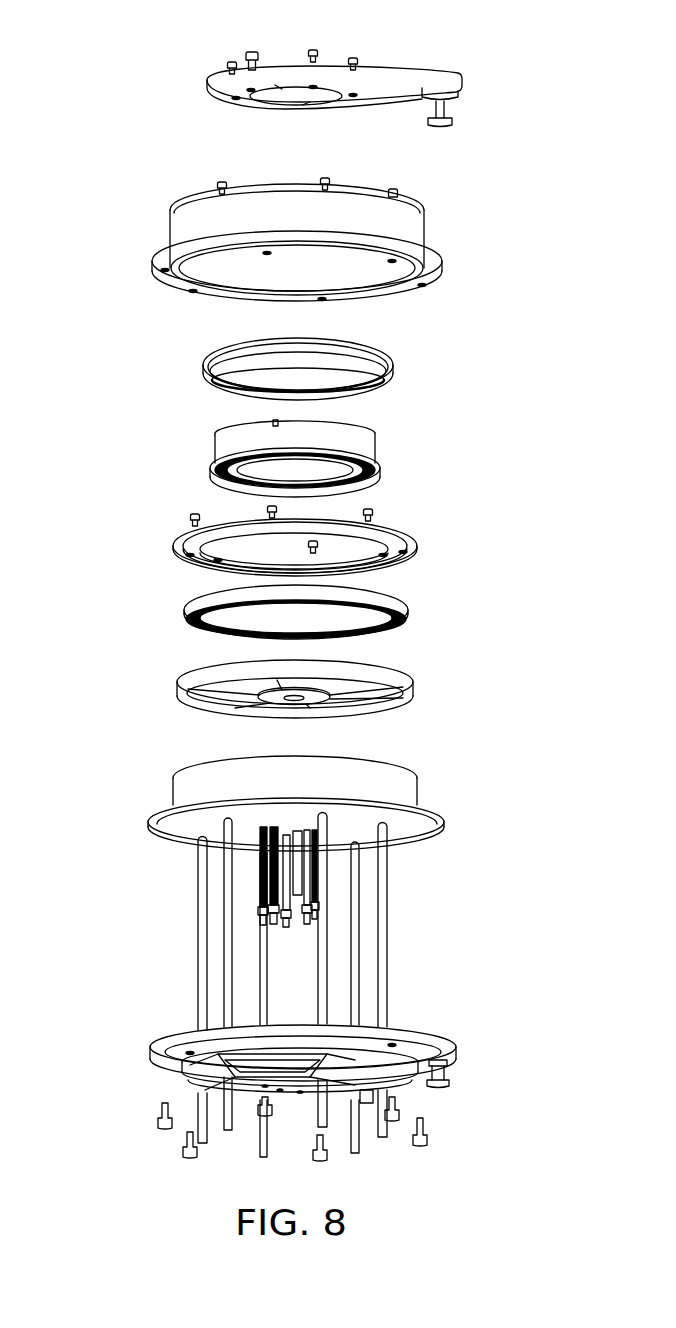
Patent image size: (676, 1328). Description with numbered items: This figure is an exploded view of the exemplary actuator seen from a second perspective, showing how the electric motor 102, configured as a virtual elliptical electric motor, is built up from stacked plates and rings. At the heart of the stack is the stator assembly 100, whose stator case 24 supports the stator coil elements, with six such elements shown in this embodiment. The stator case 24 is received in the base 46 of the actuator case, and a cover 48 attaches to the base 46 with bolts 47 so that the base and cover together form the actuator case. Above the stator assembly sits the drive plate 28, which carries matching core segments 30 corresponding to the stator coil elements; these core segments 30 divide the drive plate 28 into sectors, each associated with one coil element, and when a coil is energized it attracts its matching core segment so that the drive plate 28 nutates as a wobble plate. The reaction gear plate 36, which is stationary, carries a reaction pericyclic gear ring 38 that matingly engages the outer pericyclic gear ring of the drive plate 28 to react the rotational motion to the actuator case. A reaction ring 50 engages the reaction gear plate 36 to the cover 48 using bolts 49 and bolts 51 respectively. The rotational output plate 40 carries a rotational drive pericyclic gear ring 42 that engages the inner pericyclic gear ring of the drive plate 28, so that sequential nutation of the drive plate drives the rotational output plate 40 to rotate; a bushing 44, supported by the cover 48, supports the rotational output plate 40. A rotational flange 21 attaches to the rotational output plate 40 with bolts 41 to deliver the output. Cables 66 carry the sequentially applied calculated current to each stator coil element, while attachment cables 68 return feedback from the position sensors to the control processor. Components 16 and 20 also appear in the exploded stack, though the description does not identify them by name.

The locating pin 16 is at (447, 1075).
The locating pin 20 is at (447, 104).
The rotational flange 21 is at (415, 73).
The stator case 24 is at (412, 794).
The drive plate 28 is at (410, 686).
The matching core segments 30 is at (363, 708).
The reaction gear plate 36 is at (407, 607).
The reaction pericyclic gear ring 38 is at (398, 628).
The rotational output plate 40 is at (370, 443).
The bolts 41 is at (251, 52).
The rotational drive pericyclic gear ring 42 is at (380, 484).
The bushing 44 is at (393, 367).
The base 46 is at (425, 1033).
The bolts 47 is at (427, 1137).
The cover 48 is at (418, 230).
The bolts 49 is at (194, 514).
The reaction ring 50 is at (417, 544).
The bolts 51 is at (222, 181).
The cables 66 is at (383, 890).
The attachment cables 68 is at (306, 928).
The stator assembly 100 is at (173, 793).
The electric motor 102 is at (474, 650).